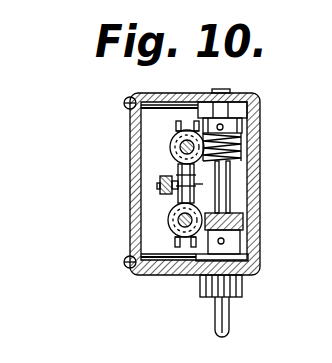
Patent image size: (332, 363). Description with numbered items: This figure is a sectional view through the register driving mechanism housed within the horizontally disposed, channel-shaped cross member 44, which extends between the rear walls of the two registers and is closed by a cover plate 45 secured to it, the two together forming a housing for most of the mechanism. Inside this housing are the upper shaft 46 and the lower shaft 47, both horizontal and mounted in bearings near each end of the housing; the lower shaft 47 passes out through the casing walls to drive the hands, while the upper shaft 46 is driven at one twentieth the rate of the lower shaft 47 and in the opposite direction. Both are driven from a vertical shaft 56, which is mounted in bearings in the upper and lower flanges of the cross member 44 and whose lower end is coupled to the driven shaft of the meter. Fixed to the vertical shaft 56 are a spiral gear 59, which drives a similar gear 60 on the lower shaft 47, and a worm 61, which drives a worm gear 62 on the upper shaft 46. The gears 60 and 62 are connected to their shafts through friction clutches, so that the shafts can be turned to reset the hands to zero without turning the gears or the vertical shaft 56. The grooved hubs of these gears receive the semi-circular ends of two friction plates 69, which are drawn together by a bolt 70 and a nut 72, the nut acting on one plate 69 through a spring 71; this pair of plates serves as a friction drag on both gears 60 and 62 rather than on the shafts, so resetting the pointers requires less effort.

The cross member 44 is at (241, 221).
The cover plate 45 is at (132, 268).
The upper shaft 46 is at (186, 148).
The lower shaft 47 is at (180, 211).
The vertical shaft 56 is at (232, 321).
The spiral gear 59 is at (242, 241).
The spiral gear 60 is at (178, 226).
The worm 61 is at (240, 152).
The worm gear 62 is at (172, 137).
The friction plates 69 is at (165, 232).
The bolt 70 is at (200, 183).
The spring 71 is at (158, 185).
The nut 72 is at (158, 180).